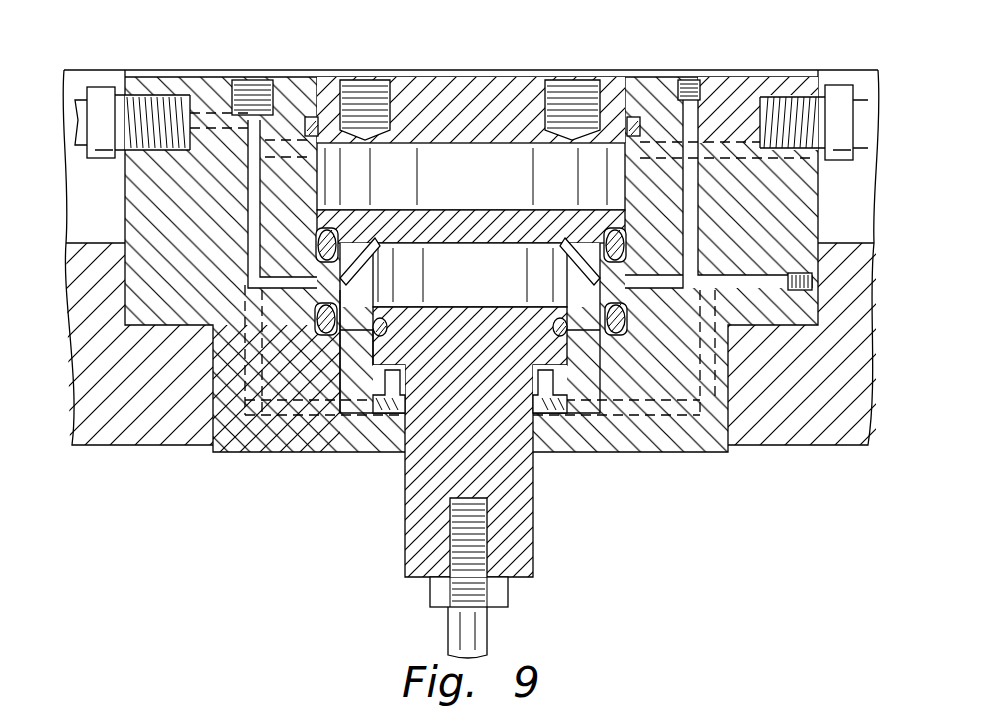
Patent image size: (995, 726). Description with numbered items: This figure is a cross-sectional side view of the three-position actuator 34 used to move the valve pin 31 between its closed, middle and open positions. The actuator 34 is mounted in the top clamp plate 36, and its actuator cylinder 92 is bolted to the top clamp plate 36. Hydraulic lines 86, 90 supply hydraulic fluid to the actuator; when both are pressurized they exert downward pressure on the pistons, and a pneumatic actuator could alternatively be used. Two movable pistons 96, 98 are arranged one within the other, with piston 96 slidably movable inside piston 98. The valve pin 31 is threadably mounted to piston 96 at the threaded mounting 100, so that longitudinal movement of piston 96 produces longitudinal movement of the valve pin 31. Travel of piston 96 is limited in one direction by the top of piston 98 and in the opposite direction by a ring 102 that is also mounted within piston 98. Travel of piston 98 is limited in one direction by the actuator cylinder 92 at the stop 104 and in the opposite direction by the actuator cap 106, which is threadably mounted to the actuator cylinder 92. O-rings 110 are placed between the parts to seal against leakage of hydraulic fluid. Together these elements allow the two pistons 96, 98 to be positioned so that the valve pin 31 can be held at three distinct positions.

The valve pin 31 is at (488, 641).
The three-position actuator 34 is at (484, 77).
The top clamp plate 36 is at (827, 447).
The hydraulic line 86 is at (838, 92).
The hydraulic line 90 is at (95, 88).
The actuator cylinder 92 is at (728, 95).
The piston 96 is at (525, 490).
The piston 98 is at (313, 455).
The threaded mounting 100 is at (460, 549).
The ring 102 is at (384, 418).
The stop on actuator cylinder 104 is at (585, 410).
The actuator cap 106 is at (425, 100).
The O-rings 110 is at (633, 117).